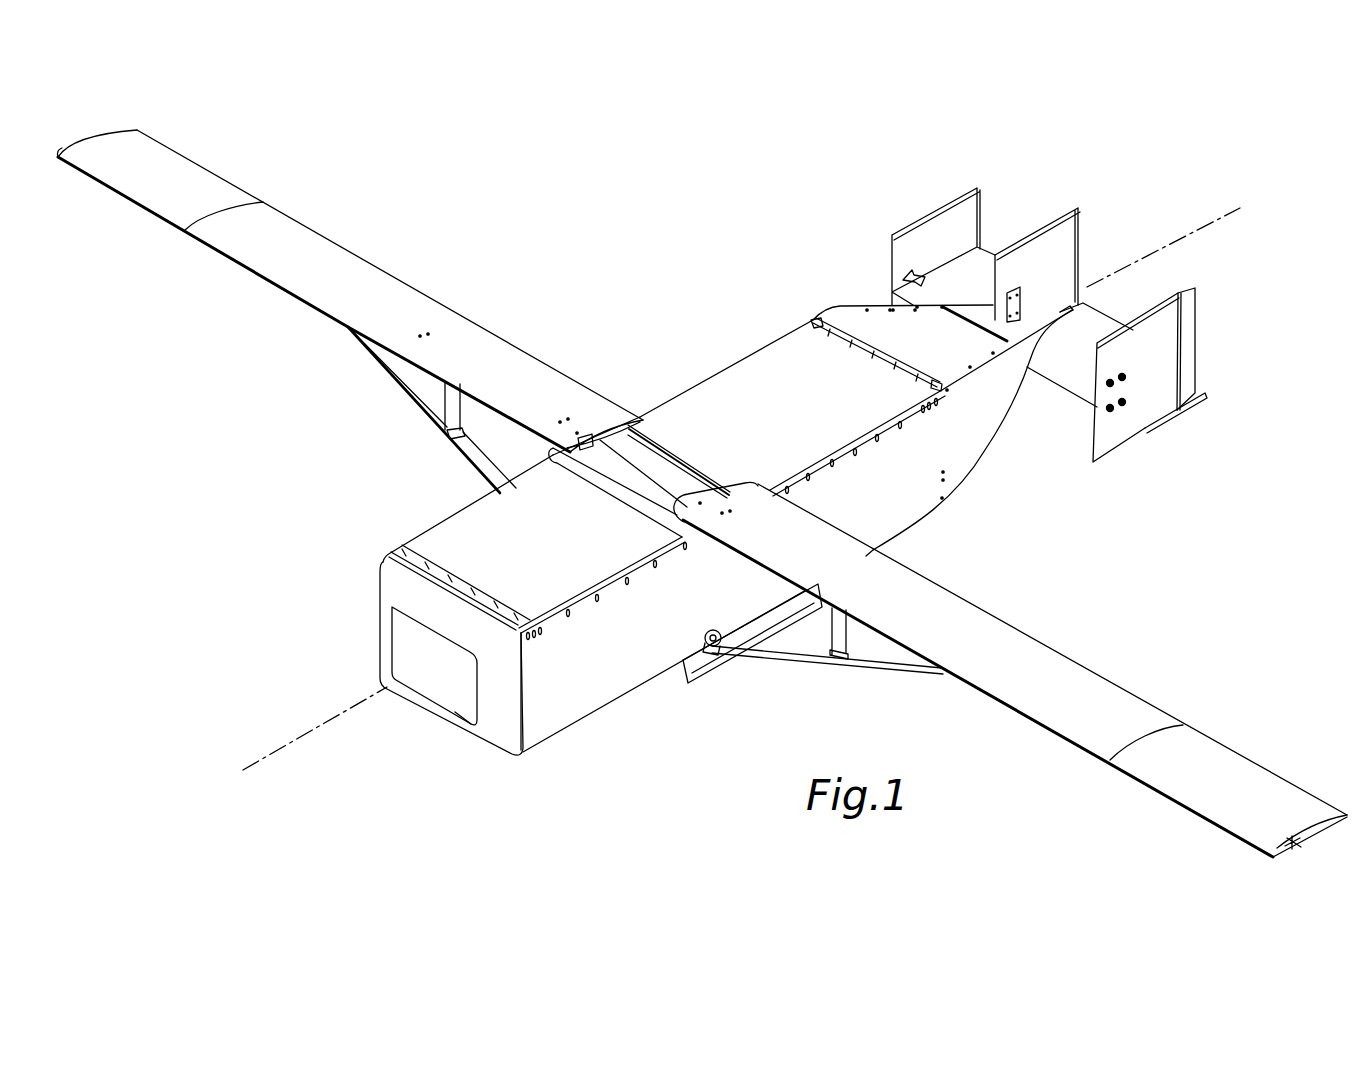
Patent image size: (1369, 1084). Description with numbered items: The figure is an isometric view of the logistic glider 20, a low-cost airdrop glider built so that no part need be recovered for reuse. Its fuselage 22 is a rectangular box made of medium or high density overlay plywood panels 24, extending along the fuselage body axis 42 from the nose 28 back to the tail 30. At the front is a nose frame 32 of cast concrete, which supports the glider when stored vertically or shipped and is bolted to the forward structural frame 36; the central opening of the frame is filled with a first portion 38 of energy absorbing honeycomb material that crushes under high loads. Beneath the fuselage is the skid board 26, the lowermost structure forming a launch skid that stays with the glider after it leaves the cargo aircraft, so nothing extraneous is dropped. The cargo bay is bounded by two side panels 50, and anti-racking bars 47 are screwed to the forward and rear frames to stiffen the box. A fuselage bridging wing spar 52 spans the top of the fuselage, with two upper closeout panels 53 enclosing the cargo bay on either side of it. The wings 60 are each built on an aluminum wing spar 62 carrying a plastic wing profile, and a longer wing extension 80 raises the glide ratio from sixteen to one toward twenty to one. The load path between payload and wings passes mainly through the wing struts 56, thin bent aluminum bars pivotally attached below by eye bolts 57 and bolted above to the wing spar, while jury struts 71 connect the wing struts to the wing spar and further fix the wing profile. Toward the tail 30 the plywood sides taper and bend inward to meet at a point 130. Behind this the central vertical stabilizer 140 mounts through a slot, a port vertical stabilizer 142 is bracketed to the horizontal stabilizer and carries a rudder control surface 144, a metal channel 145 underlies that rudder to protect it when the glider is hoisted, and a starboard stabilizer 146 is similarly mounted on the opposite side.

The logistic glider 20 is at (366, 520).
The fuselage 22 is at (583, 720).
The plywood panels 24 is at (625, 654).
The skid board 26 is at (703, 680).
The nose 28 is at (481, 708).
The tail 30 is at (1008, 423).
The nose frame 32 is at (418, 707).
The forward structural frame 36 is at (447, 597).
The first portion of energy absorbing material 38 is at (448, 675).
The fuselage body axis 42 is at (283, 747).
The anti-racking bars 47 is at (482, 588).
The side panels 50 is at (887, 423).
The fuselage bridging wing spar 52 is at (620, 483).
The upper closeout panels 53 is at (553, 552).
The wing struts 56 is at (467, 460).
The bolts 57 is at (737, 643).
The wings 60 is at (427, 293).
The wing spar 62 is at (1293, 853).
The jury struts 71 is at (450, 403).
The wing extension 80 is at (190, 158).
The meeting point 130 is at (1082, 305).
The vertical stabilizer 140 is at (1043, 227).
The port vertical stabilizer 142 is at (1167, 293).
The rudder control surface 144 is at (1195, 332).
The metal channel 145 is at (1205, 393).
The starboard stabilizer 146 is at (950, 198).